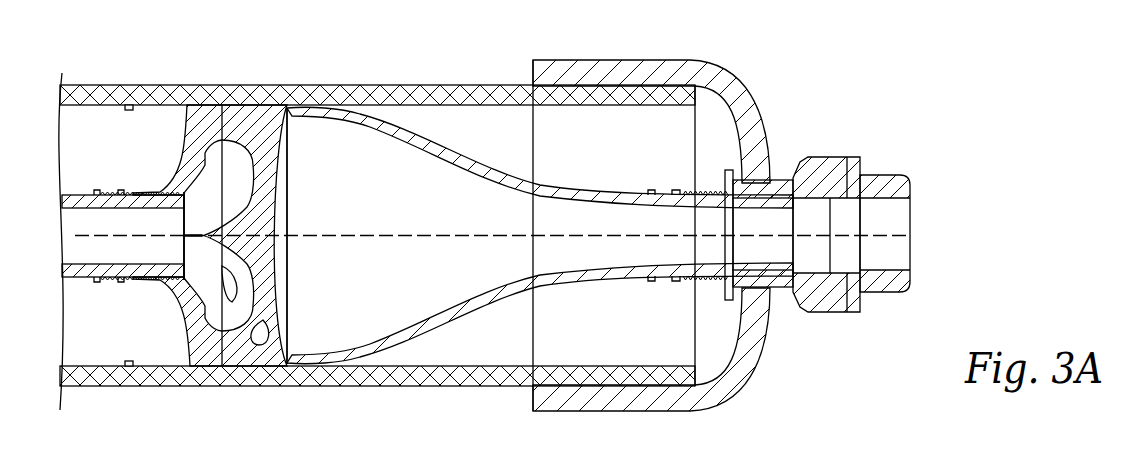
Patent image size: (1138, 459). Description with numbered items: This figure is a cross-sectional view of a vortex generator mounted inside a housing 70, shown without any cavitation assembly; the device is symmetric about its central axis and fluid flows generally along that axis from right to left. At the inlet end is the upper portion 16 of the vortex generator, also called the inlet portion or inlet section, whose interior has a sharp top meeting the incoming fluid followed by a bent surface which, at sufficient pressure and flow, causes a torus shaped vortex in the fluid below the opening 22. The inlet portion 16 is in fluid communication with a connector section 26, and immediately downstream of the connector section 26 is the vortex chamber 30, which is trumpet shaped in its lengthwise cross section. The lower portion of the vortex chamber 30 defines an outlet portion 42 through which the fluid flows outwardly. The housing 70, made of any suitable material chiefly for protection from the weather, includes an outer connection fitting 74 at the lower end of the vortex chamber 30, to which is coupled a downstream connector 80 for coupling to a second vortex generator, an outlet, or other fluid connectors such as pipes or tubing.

The upper portion 16 is at (270, 115).
The opening 22 is at (85, 279).
The connector section 26 is at (365, 304).
The vortex chamber 30 is at (452, 158).
The outlet portion 42 is at (728, 225).
The housing 70 is at (433, 87).
The outer connection fitting 74 is at (627, 65).
The downstream connector 80 is at (833, 313).